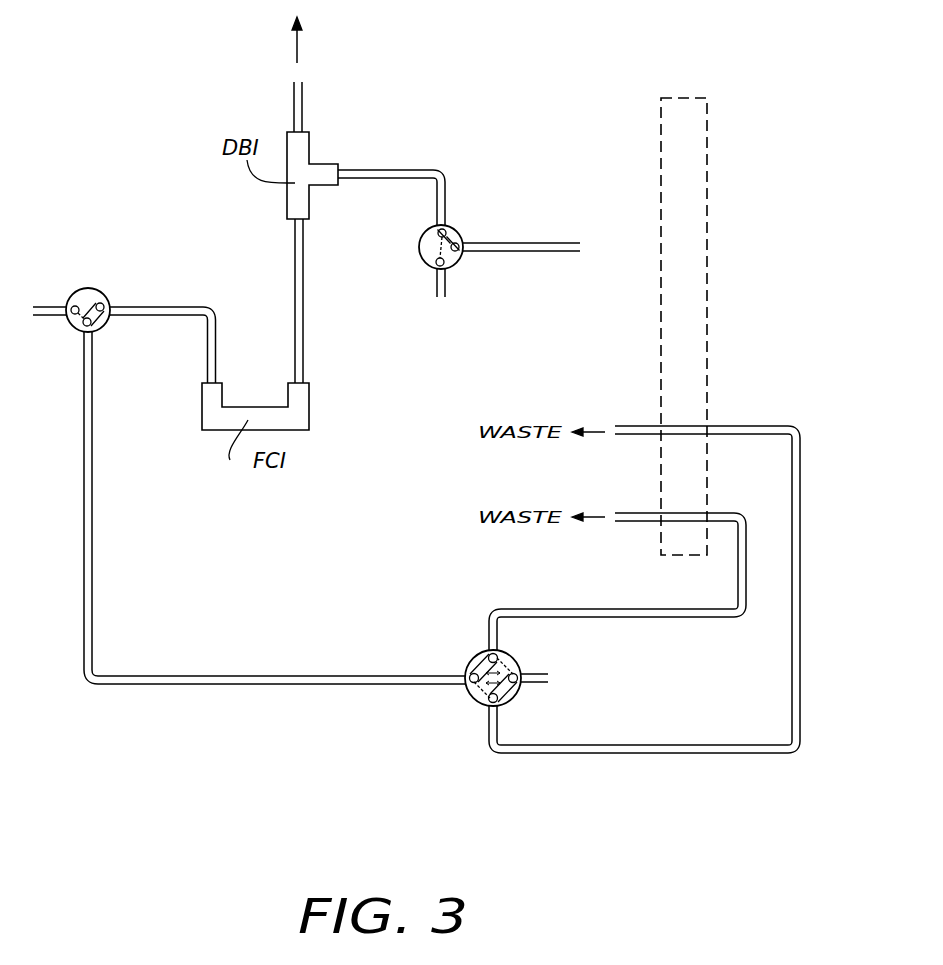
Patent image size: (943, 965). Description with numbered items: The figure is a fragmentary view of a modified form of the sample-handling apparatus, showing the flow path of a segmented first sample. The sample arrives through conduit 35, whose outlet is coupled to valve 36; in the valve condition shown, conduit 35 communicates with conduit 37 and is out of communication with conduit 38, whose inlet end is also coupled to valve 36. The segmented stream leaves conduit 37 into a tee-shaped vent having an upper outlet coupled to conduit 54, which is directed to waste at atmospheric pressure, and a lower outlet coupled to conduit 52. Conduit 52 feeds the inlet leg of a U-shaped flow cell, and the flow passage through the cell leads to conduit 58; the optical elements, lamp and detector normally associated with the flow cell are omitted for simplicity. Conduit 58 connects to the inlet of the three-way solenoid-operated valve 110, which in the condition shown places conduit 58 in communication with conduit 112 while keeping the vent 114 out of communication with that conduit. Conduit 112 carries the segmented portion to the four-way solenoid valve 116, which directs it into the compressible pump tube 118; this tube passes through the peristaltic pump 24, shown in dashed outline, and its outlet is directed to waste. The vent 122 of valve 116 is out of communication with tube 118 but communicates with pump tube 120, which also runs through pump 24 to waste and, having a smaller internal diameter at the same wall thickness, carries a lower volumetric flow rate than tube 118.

The peristaltic pump 24 is at (697, 138).
The conduit 35 is at (512, 245).
The valve 36 is at (458, 265).
The conduit 37 is at (444, 193).
The conduit 38 is at (437, 283).
The conduit 52 is at (305, 290).
The conduit 54 is at (300, 82).
The conduit 58 is at (172, 307).
The 3-way solenoid-operated valve 110 is at (95, 297).
The conduit 112 is at (292, 650).
The vent 114 is at (50, 313).
The 4-way solenoid valve 116 is at (475, 657).
The compressible pump tube 118 is at (588, 608).
The pump tube 120 is at (585, 750).
The vent 122 is at (530, 672).